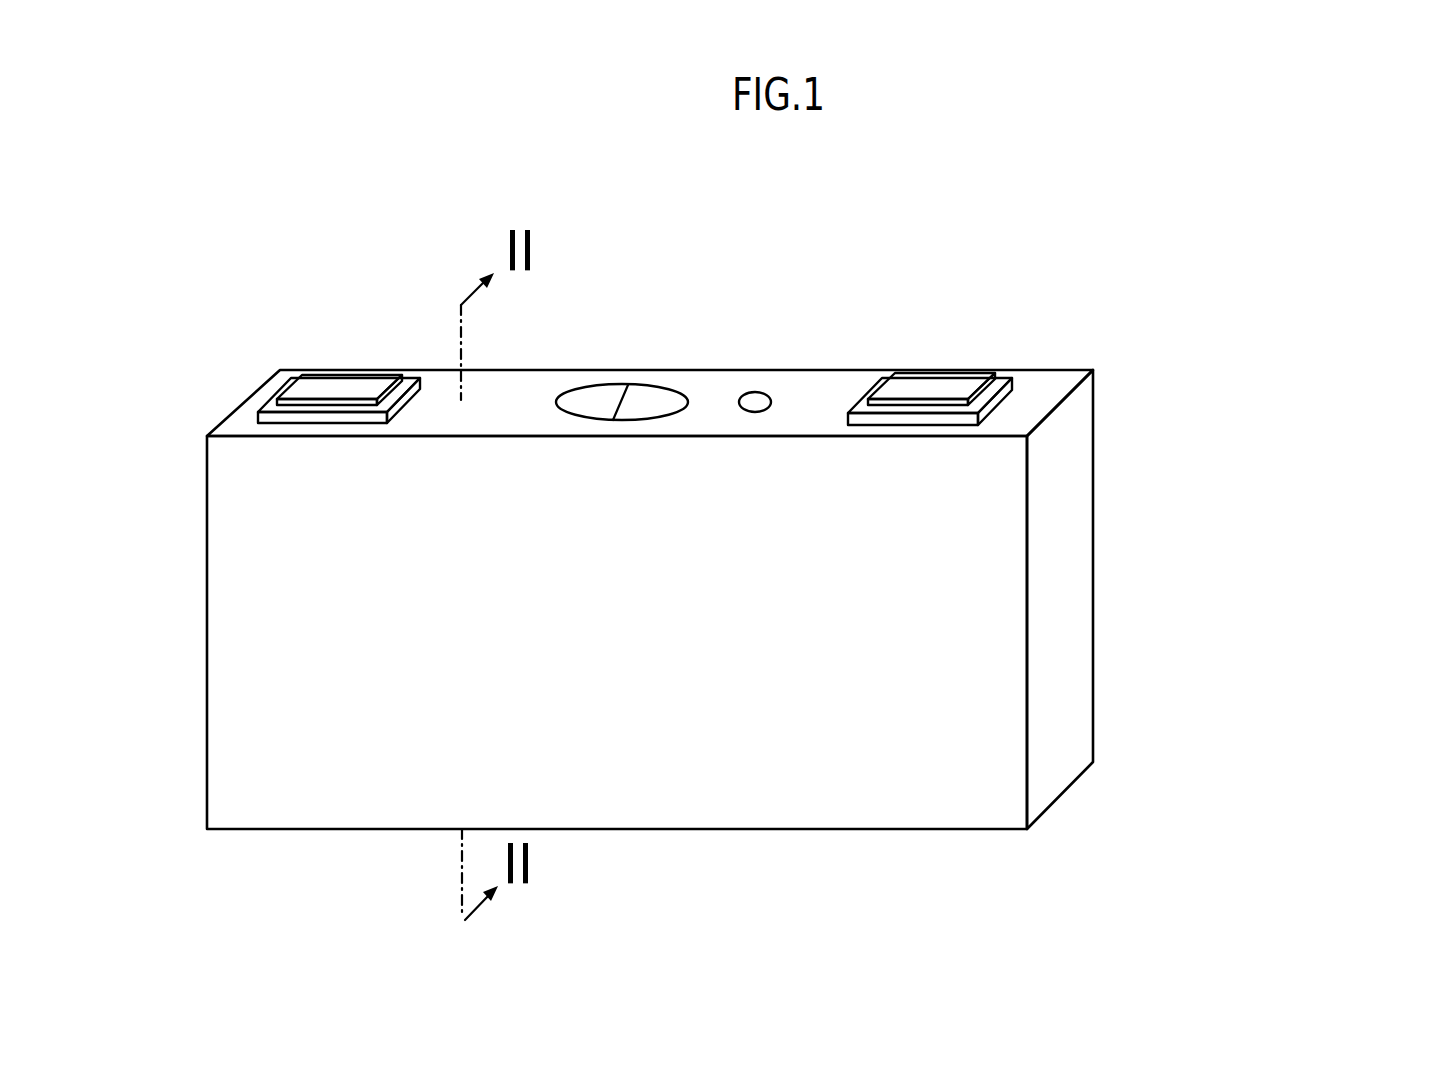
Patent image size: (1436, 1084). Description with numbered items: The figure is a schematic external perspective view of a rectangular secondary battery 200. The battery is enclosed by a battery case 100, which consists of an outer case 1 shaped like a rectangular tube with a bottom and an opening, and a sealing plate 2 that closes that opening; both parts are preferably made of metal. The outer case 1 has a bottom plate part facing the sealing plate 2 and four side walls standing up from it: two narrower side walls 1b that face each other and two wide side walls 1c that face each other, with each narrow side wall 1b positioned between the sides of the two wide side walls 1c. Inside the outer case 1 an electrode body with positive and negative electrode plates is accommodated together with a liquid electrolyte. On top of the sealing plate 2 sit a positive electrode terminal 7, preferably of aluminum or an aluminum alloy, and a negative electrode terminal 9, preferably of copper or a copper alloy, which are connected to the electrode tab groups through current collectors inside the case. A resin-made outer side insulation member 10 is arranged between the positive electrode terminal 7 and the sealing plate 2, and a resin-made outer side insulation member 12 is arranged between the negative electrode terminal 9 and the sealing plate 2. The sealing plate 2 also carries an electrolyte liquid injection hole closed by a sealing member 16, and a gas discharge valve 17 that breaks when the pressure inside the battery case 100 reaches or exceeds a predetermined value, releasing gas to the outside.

The rectangular secondary battery 200 is at (252, 162).
The battery case 100 is at (1267, 268).
The outer case 1 is at (1075, 493).
The narrow side wall 1b is at (1070, 623).
The wide side wall 1c is at (893, 797).
The sealing plate 2 is at (1037, 385).
The positive electrode terminal 7 is at (952, 385).
The negative electrode terminal 9 is at (350, 392).
The outer side insulation member 10 is at (858, 418).
The outer side insulation member 12 is at (268, 418).
The sealing member 16 is at (762, 393).
The gas discharge valve 17 is at (641, 395).